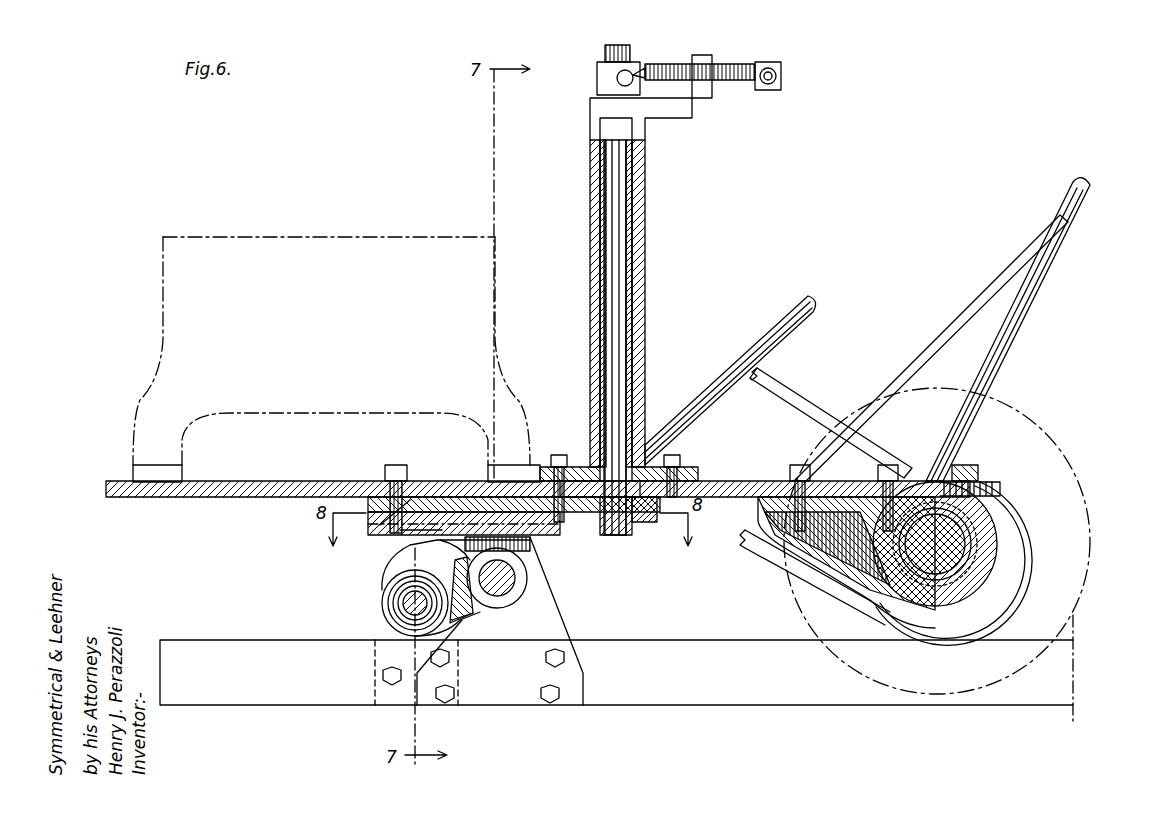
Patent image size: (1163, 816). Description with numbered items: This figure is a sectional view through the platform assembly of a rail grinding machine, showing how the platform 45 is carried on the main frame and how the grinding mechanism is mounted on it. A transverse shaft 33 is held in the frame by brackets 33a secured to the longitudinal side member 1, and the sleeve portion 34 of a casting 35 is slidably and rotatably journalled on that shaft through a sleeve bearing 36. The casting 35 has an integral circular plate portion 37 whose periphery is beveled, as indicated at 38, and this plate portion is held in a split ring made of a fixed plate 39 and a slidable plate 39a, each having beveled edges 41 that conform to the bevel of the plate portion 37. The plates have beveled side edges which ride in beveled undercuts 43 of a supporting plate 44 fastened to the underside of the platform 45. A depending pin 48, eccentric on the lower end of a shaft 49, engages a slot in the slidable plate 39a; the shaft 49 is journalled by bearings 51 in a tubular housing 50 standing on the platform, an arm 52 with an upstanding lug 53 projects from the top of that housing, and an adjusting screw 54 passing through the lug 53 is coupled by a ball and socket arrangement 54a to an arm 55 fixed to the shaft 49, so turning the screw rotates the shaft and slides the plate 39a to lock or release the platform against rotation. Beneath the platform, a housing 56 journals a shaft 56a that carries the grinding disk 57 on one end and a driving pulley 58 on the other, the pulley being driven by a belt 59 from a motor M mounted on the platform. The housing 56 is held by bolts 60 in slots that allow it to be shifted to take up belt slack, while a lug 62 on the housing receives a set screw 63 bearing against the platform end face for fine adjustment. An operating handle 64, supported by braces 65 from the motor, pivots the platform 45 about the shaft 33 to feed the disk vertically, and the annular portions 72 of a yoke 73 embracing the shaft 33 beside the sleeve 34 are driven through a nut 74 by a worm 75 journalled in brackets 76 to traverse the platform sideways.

The longitudinal side member 1 is at (680, 680).
The motor M is at (163, 303).
The shaft 33 is at (530, 600).
The brackets 33a is at (550, 628).
The sleeve portion 34 is at (520, 583).
The casting 35 is at (540, 553).
The sleeve bearing 36 is at (530, 575).
The circular plate portion 37 is at (425, 522).
The beveled periphery 38 is at (400, 515).
The plate 39 is at (378, 540).
The plate 39a is at (615, 535).
The beveled peripheral edges 41 is at (408, 530).
The beveled undercuts 43 is at (640, 530).
The supporting plate 44 is at (655, 515).
The platform 45 is at (232, 492).
The depending pin 48 is at (688, 529).
The shaft 49 is at (615, 285).
The tubular housing 50 is at (645, 325).
The bearings 51 is at (652, 160).
The arm 52 is at (680, 118).
The lug 53 is at (712, 50).
The adjusting screw 54 is at (690, 66).
The ball and socket arrangement 54a is at (638, 68).
The arm 55 is at (618, 80).
The housing 56 is at (1000, 548).
The shaft 56a is at (1000, 522).
The grinding disk 57 is at (1092, 536).
The driving pulley 58 is at (918, 605).
The belt 59 is at (838, 376).
The bolts 60 is at (840, 452).
The lug 62 is at (975, 465).
The set screw 63 is at (1000, 488).
The operating handle 64 is at (1013, 313).
The braces 65 is at (404, 505).
The annular portions 72 is at (486, 628).
The yoke 73 is at (470, 625).
The nut 74 is at (393, 610).
The worm 75 is at (405, 615).
The brackets 76 is at (382, 600).